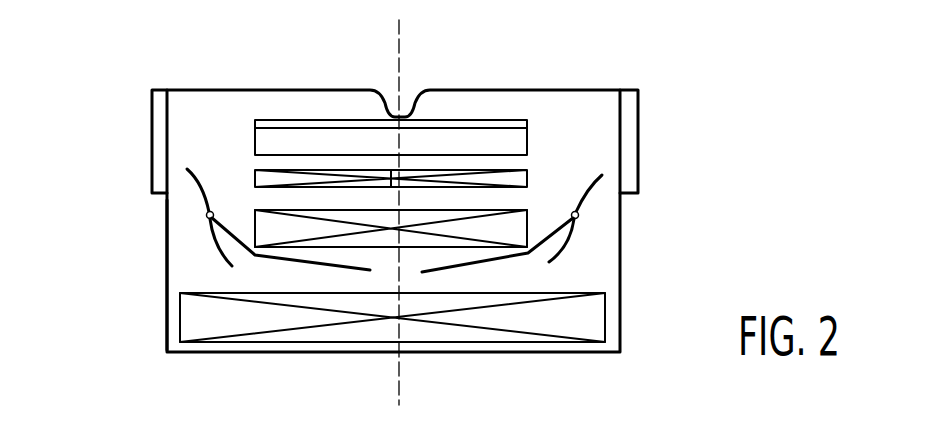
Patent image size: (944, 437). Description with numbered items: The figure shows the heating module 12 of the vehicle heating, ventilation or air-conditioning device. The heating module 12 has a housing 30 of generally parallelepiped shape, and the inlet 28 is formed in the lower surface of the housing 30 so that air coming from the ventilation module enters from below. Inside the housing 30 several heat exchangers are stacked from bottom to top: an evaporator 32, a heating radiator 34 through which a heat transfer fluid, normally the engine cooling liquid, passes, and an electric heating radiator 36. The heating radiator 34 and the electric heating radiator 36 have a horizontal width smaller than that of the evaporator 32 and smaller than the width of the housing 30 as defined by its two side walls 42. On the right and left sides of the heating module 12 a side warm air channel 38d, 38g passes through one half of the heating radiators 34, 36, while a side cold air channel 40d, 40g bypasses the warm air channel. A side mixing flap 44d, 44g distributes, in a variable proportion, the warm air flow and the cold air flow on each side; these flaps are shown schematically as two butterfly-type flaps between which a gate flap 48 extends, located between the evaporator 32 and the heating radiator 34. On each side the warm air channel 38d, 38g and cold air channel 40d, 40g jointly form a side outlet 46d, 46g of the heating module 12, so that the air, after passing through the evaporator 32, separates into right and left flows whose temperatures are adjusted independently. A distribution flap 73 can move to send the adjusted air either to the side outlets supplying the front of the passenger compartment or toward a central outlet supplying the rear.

The heating module 12 is at (156, 298).
The inlet 28 is at (413, 355).
The housing 30 is at (165, 233).
The evaporator 32 is at (238, 332).
The heating radiator 34 is at (337, 240).
The electric heating radiator 36 is at (313, 178).
The left side warm air channel 38g is at (276, 197).
The right side warm air channel 38d is at (497, 197).
The left side cold air channel 40g is at (188, 222).
The right side cold air channel 40d is at (597, 210).
The side walls 42 is at (162, 330).
The left side mixing flap 44g is at (212, 246).
The right side mixing flap 44d is at (562, 250).
The left side outlet 46g is at (158, 117).
The right side outlet 46d is at (632, 120).
The gate flap 48 is at (350, 270).
The distribution flap 73 is at (477, 127).